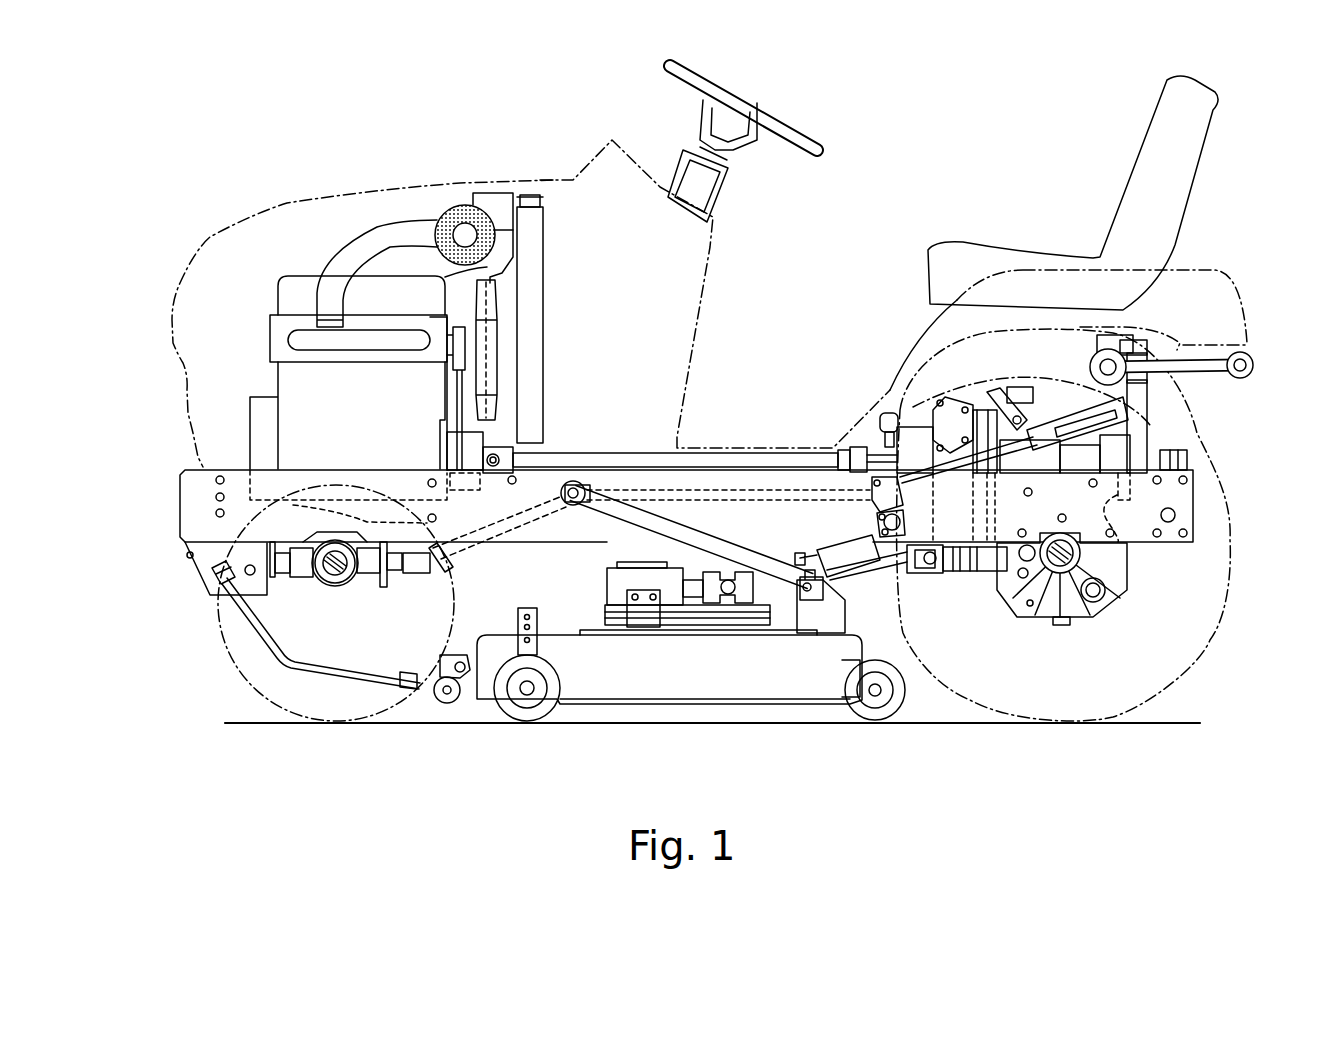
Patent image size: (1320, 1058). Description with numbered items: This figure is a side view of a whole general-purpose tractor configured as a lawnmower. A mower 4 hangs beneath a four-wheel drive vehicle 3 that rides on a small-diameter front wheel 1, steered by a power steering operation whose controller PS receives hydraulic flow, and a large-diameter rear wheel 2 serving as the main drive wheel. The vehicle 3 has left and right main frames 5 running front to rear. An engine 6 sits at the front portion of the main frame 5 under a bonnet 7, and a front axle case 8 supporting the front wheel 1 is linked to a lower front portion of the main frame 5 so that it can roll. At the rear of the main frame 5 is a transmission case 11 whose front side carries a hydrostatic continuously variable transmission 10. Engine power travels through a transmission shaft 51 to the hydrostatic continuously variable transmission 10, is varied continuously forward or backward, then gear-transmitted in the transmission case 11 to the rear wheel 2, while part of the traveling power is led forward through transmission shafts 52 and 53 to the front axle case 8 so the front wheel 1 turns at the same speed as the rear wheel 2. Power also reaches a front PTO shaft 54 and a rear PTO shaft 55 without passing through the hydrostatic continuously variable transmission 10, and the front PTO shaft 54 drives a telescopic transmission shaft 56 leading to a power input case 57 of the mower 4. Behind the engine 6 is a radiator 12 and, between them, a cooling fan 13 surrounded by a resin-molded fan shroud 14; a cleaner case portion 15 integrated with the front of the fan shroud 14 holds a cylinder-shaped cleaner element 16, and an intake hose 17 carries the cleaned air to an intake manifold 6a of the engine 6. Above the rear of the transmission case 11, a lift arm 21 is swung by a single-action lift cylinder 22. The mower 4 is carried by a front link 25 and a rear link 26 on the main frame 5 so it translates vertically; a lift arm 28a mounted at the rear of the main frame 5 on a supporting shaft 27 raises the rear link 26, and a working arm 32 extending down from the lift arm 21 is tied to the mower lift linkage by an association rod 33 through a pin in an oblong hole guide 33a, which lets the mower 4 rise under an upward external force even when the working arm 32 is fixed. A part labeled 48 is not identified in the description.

The front wheel 1 is at (235, 655).
The rear wheel 2 is at (1212, 648).
The four-wheel drive vehicle 3 is at (890, 183).
The mower 4 is at (713, 702).
The main frame 5 is at (395, 462).
The engine 6 is at (280, 285).
The intake manifold 6a is at (290, 340).
The bonnet 7 is at (320, 195).
The front axle case 8 is at (335, 587).
The hydrostatic continuously variable transmission 10 is at (913, 427).
The transmission case 11 is at (1125, 600).
The radiator 12 is at (543, 270).
The cooling fan 13 is at (492, 335).
The fan shroud 14 is at (487, 271).
The cleaner case portion 15 is at (463, 205).
The cleaner element 16 is at (437, 213).
The intake hose 17 is at (353, 243).
The lift arm 21 is at (1170, 360).
The lift cylinder 22 is at (1057, 397).
The front link 25 is at (250, 620).
The rear link 26 is at (818, 546).
The supporting shaft 27 is at (905, 525).
The lift arm 28a is at (855, 562).
The working arm 32 is at (1080, 417).
The association rod 33 is at (950, 463).
The oblong hole guide 33a is at (1078, 440).
The knob 48 is at (880, 422).
The transmission shaft 51 is at (633, 453).
The transmission shaft 52 is at (690, 501).
The transmission shaft 53 is at (470, 556).
The front PTO shaft 54 is at (968, 572).
The rear PTO shaft 55 is at (1175, 450).
The telescopic transmission shaft 56 is at (905, 575).
The power input case 57 is at (603, 585).
The controller PS is at (718, 190).